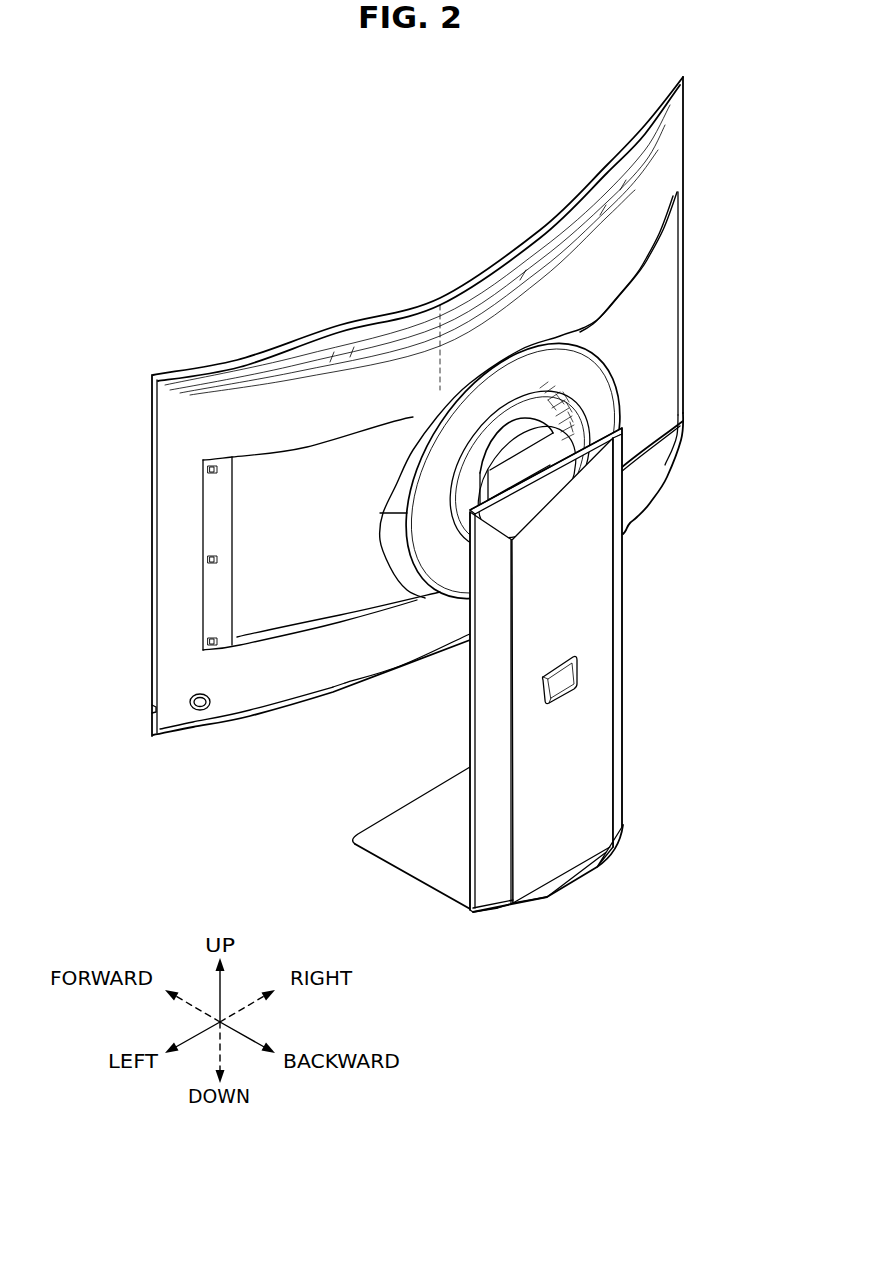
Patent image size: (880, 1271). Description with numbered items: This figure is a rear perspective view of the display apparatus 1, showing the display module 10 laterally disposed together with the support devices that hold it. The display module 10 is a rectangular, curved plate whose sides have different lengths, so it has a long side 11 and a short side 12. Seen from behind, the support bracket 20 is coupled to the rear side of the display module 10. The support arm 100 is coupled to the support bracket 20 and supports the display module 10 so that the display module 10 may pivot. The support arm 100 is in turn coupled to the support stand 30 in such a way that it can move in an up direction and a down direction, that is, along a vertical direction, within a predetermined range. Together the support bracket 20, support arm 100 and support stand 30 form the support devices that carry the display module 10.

The display apparatus 1 is at (318, 163).
The display module 10 is at (712, 130).
The long side 11 is at (440, 300).
The short side 12 is at (684, 192).
The support bracket 20 is at (560, 410).
The support arm 100 is at (564, 430).
The support stand 30 is at (642, 599).